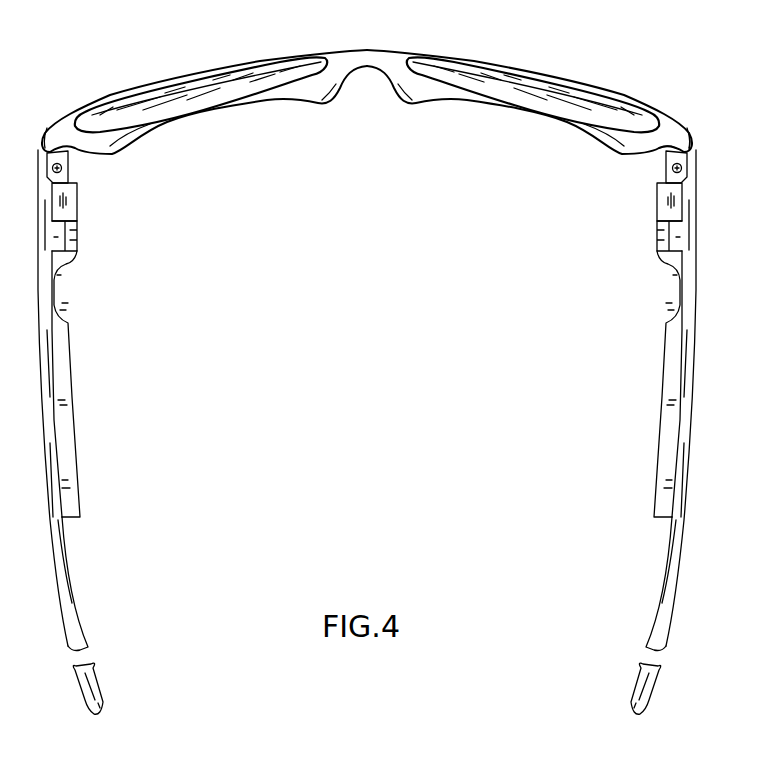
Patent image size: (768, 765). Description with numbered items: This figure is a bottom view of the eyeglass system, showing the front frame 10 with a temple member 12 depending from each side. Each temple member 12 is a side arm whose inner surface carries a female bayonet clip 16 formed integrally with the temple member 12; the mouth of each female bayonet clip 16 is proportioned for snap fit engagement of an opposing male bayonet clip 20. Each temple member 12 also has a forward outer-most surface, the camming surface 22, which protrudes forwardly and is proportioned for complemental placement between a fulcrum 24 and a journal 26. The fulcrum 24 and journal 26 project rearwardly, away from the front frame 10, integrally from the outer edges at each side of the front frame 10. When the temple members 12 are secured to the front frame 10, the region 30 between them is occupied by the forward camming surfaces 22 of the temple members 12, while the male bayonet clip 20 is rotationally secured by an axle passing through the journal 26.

The front frame 10 is at (509, 53).
The temple member 12 is at (695, 370).
The female bayonet clip 16 is at (658, 215).
The male bayonet clip 20 is at (675, 238).
The camming surface 22 is at (697, 157).
The fulcrum 24 is at (696, 153).
The journal 26 is at (667, 160).
The region 30 is at (677, 143).